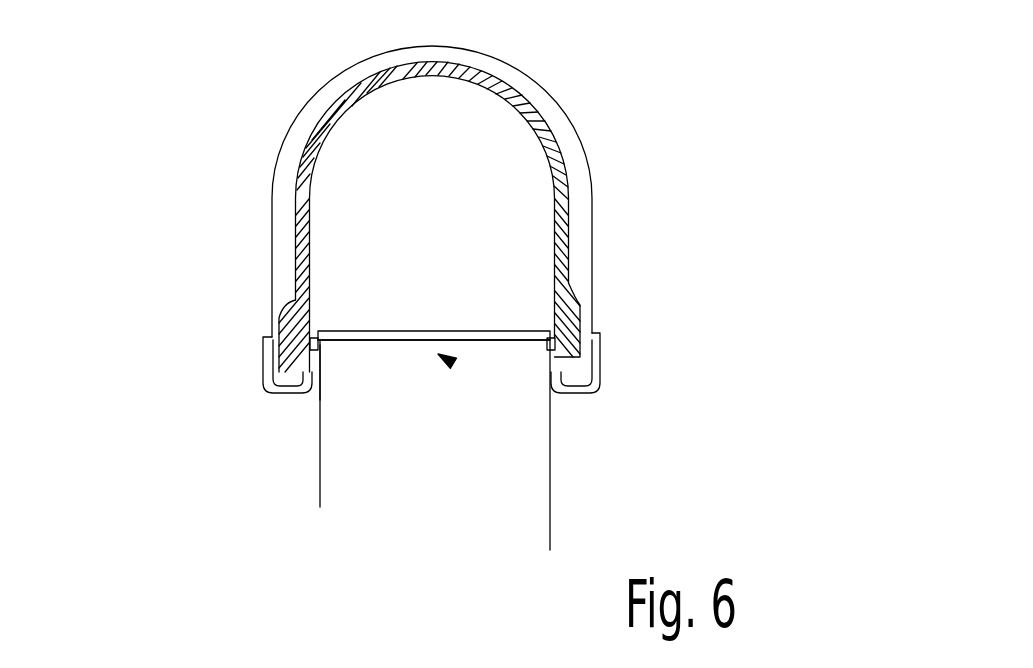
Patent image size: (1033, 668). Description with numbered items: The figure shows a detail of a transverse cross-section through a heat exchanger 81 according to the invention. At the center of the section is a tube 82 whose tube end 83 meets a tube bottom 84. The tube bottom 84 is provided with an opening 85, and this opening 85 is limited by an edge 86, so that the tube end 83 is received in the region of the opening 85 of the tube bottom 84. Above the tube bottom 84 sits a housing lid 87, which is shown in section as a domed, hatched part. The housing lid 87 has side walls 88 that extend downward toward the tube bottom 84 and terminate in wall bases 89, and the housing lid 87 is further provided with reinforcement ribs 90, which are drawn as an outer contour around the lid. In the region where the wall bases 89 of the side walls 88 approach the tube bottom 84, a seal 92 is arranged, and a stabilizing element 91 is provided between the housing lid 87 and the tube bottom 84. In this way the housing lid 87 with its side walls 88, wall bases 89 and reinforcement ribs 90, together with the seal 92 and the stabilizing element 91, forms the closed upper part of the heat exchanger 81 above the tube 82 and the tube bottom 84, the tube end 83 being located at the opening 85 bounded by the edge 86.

The heat exchanger 81 is at (186, 150).
The tube 82 is at (385, 467).
The tube end 83 is at (322, 342).
The tube bottom 84 is at (322, 372).
The opening 85 is at (458, 366).
The edge 86 is at (559, 343).
The housing lid 87 is at (534, 115).
The side walls 88 is at (563, 283).
The wall bases 89 is at (590, 362).
The reinforcement ribs 90 is at (578, 153).
The stabilizing element 91 is at (390, 337).
The seal 92 is at (287, 378).